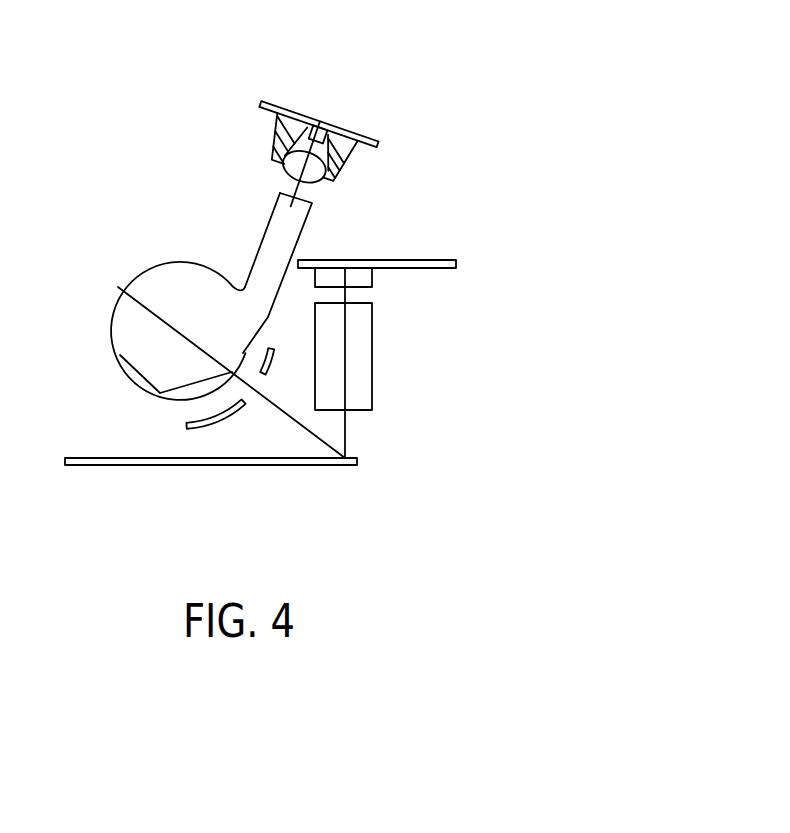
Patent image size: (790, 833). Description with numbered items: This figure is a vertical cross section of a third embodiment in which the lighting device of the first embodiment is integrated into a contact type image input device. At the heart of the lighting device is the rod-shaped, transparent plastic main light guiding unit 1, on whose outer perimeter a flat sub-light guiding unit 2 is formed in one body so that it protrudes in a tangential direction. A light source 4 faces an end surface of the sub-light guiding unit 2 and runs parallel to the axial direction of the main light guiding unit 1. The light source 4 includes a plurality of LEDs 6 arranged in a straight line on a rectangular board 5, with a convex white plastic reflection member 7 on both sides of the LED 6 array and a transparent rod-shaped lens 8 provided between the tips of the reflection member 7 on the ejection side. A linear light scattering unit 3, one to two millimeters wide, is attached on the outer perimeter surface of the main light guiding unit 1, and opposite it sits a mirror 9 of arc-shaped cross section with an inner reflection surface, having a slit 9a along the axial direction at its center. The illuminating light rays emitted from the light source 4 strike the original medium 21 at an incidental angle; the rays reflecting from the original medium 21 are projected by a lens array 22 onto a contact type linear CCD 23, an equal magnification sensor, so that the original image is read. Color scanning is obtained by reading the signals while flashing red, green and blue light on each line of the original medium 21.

The main light guiding unit 1 is at (168, 281).
The sub-light guiding unit 2 is at (260, 243).
The light scattering unit 3 is at (118, 287).
The light source 4 is at (316, 88).
The rectangular board 5 is at (380, 139).
The LED 6 is at (324, 129).
The reflection member 7 is at (273, 137).
The rod-shaped lens 8 is at (285, 176).
The mirror 9 is at (186, 426).
The slit 9a is at (256, 403).
The original medium 21 is at (153, 465).
The lens array 22 is at (372, 362).
The contact type linear CCD 23 is at (372, 277).